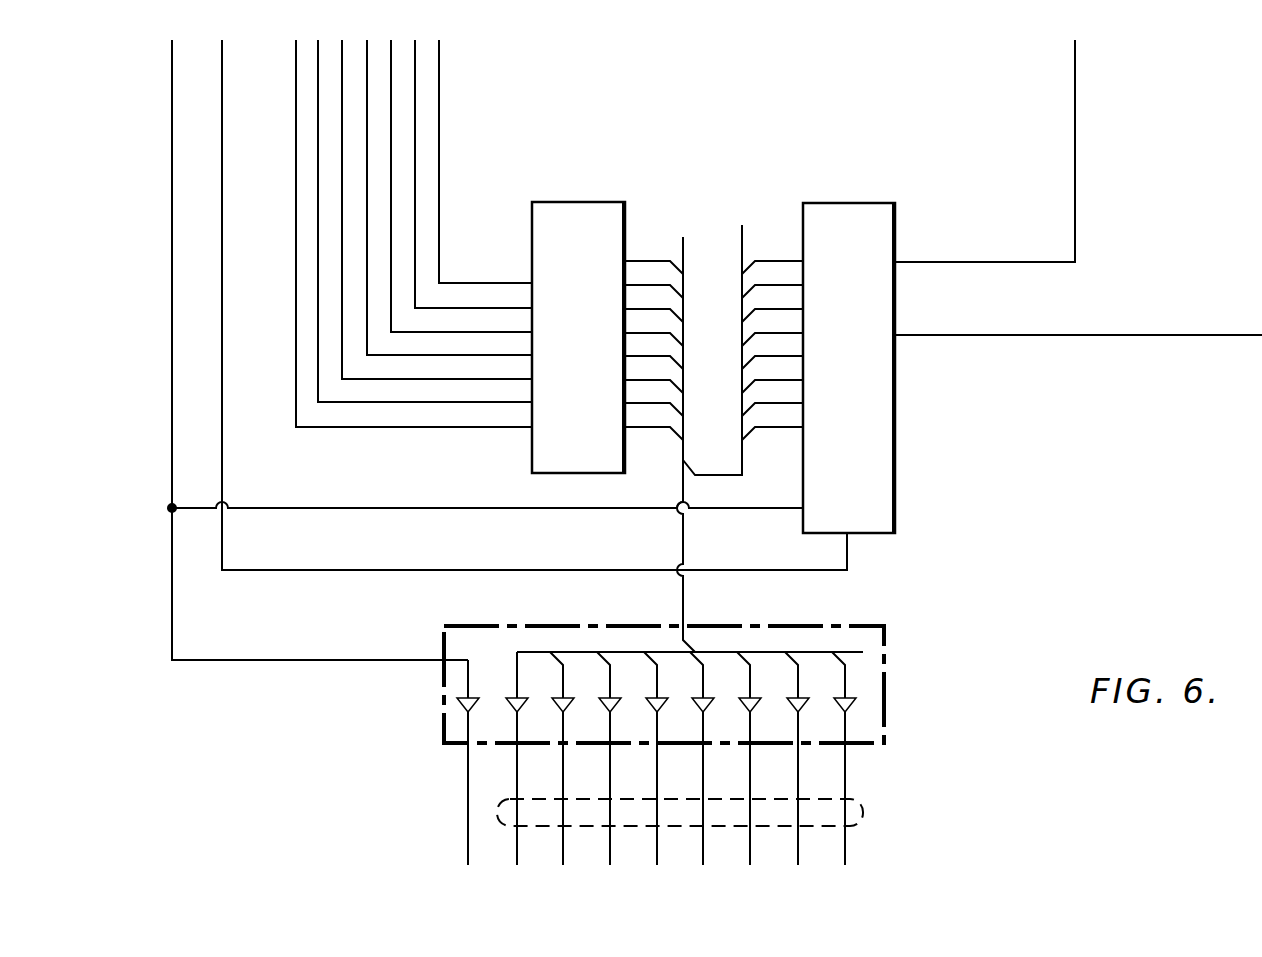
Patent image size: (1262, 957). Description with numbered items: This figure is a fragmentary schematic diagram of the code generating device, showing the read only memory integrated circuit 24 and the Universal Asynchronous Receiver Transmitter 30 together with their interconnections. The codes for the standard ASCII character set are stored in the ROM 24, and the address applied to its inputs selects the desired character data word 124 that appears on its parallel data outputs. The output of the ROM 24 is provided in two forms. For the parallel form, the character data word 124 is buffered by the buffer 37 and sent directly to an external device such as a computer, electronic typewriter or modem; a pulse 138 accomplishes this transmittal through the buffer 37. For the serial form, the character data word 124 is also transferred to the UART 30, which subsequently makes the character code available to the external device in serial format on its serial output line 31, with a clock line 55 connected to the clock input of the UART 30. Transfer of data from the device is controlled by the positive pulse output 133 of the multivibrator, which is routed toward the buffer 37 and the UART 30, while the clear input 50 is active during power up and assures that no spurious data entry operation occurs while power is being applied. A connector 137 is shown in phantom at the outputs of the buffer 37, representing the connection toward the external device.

The positive pulse output 133 is at (172, 205).
The clear input 50 is at (222, 130).
The read only memory integrated circuit 24 is at (580, 201).
The character data word 124 is at (680, 544).
The Universal Asynchronous Receiver Transmitter 30 is at (853, 203).
The clock line 55 is at (1075, 140).
The serial output line 31 is at (1187, 334).
The buffer 37 is at (886, 672).
The pulse 138 is at (468, 770).
The output connector 137 is at (865, 808).